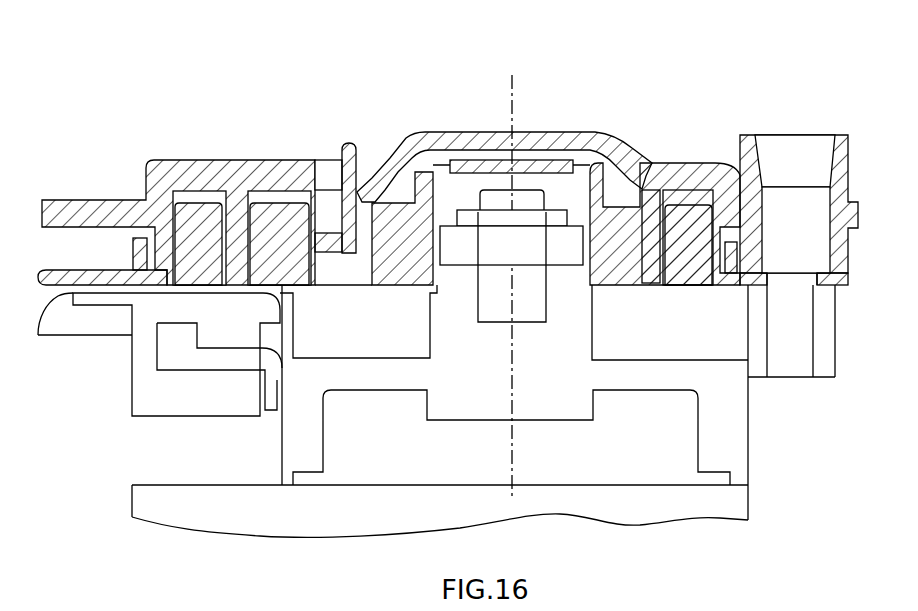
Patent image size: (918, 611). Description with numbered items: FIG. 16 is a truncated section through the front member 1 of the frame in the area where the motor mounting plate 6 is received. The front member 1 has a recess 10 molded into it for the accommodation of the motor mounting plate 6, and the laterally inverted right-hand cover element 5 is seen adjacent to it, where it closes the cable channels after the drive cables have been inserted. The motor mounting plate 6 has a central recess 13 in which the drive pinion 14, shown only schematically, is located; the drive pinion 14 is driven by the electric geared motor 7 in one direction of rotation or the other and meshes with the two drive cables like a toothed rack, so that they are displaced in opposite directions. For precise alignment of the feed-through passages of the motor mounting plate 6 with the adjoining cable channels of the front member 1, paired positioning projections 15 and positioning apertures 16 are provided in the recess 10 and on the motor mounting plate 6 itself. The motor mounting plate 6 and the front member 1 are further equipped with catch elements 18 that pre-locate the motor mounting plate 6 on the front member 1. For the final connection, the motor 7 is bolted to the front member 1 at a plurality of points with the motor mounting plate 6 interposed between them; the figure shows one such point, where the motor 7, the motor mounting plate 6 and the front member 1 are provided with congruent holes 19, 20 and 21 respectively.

The front member 1 is at (57, 191).
The right-hand cover element 5 is at (50, 278).
The motor mounting plate 6 is at (395, 201).
The electric geared motor 7 is at (752, 433).
The recess 10 is at (615, 188).
The central recess 13 is at (583, 177).
The drive pinion 14 is at (462, 258).
The positioning projections 15 is at (233, 210).
The positioning apertures 16 is at (235, 285).
The catch elements 18 is at (349, 139).
The hole in motor 19 is at (782, 358).
The hole in motor mounting plate 20 is at (793, 284).
The hole in front member 21 is at (786, 222).